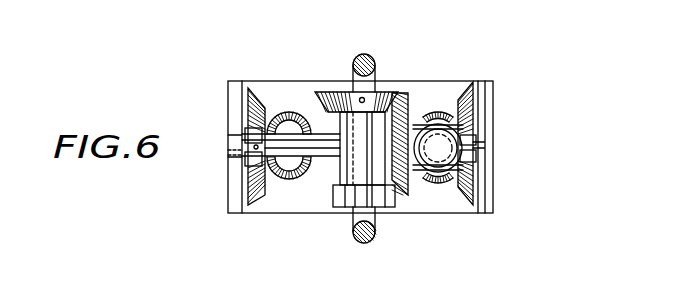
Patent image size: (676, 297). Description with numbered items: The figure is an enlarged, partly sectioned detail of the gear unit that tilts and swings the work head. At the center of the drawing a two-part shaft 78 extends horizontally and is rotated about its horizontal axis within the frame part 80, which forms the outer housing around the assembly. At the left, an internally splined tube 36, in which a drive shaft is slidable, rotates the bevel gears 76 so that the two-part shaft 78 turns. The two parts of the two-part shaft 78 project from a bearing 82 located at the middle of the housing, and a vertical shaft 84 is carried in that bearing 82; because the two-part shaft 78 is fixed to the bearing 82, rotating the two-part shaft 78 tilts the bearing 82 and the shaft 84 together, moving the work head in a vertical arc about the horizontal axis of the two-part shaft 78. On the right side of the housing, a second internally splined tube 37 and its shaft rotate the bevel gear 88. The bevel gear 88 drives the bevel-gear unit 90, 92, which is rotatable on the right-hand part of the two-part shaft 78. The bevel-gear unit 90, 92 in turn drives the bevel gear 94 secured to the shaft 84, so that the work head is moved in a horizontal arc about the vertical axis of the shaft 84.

The frame part 80 is at (390, 80).
The bevel gears 76 is at (266, 106).
The two-part shaft 78 is at (330, 133).
The internally splined tube 36 is at (268, 172).
The bevel gear 94 is at (338, 92).
The bearing 82 is at (346, 182).
The shaft 84 is at (342, 170).
The bevel-gear unit 92 is at (407, 108).
The bevel gear 88 is at (447, 178).
The internally splined tube 37 is at (484, 60).
The bevel-gear unit 90 is at (474, 98).